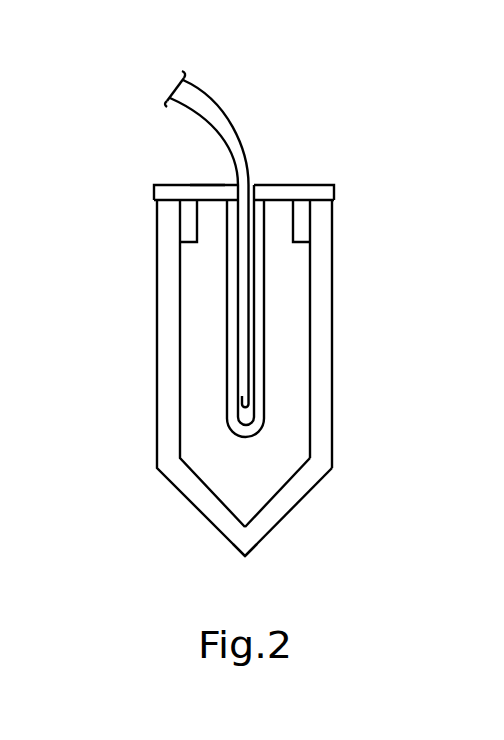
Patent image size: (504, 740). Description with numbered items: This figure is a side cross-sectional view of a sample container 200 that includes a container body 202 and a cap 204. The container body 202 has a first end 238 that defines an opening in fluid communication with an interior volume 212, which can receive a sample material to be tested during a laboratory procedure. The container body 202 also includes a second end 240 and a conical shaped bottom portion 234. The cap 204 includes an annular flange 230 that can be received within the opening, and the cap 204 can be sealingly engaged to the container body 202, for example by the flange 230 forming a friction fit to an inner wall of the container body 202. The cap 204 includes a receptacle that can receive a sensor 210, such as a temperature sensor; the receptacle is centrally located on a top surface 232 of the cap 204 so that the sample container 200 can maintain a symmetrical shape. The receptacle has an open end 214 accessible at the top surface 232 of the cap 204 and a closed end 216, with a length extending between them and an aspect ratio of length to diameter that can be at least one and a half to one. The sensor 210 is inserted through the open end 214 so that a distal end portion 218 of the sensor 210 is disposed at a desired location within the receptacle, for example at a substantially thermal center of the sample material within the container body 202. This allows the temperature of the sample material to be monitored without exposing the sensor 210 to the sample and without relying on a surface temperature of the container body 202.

The sample container 200 is at (400, 162).
The container body 202 is at (336, 354).
The cap 204 is at (307, 184).
The sensor 210 is at (208, 93).
The interior volume 212 is at (290, 402).
The open end 214 is at (254, 185).
The closed end 216 is at (246, 438).
The distal end portion 218 is at (240, 422).
The annular flange 230 is at (189, 223).
The top surface 232 is at (205, 184).
The conical shaped bottom portion 234 is at (287, 518).
The first end 238 is at (332, 212).
The second end 240 is at (244, 557).